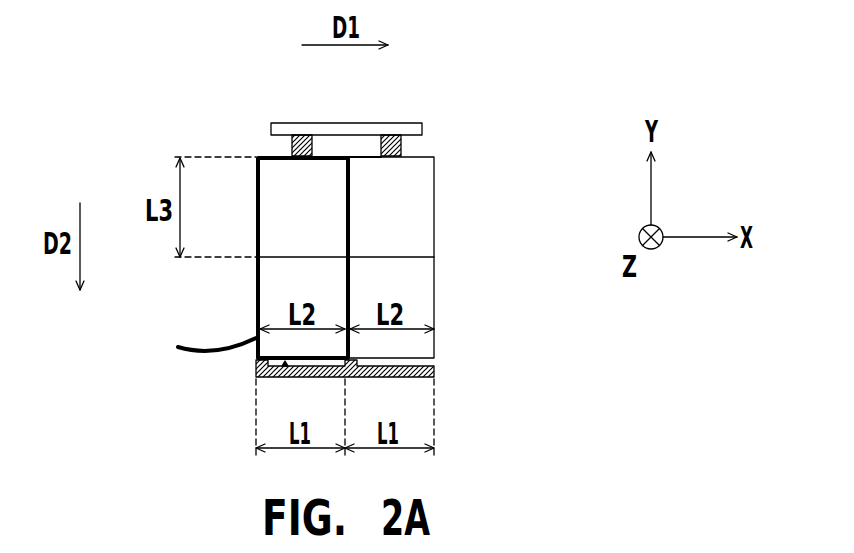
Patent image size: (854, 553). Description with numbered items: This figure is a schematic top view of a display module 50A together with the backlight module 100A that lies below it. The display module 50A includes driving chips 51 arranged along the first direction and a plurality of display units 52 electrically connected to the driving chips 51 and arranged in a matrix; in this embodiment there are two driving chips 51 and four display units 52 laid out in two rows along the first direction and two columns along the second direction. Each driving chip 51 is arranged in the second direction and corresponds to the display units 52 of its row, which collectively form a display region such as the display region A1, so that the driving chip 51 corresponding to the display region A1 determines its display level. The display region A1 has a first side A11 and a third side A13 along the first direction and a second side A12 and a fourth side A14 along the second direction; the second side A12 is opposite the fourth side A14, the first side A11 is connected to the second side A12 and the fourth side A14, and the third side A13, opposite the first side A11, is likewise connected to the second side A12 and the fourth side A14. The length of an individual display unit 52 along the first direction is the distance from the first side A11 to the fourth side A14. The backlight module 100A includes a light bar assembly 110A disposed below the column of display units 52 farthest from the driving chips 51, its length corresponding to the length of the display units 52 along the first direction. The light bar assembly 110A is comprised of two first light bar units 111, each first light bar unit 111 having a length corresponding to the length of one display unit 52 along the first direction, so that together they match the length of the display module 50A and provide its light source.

The display module 50A is at (207, 139).
The driving chip 51 is at (292, 143).
The display unit 52 is at (270, 197).
The first side A11 is at (327, 153).
The second side A12 is at (254, 278).
The third side A13 is at (285, 367).
The fourth side A14 is at (352, 230).
The display region A1 is at (204, 345).
The first light bar unit 111 is at (434, 370).
The light bar assembly 110A is at (408, 391).
The backlight module 100A is at (408, 391).